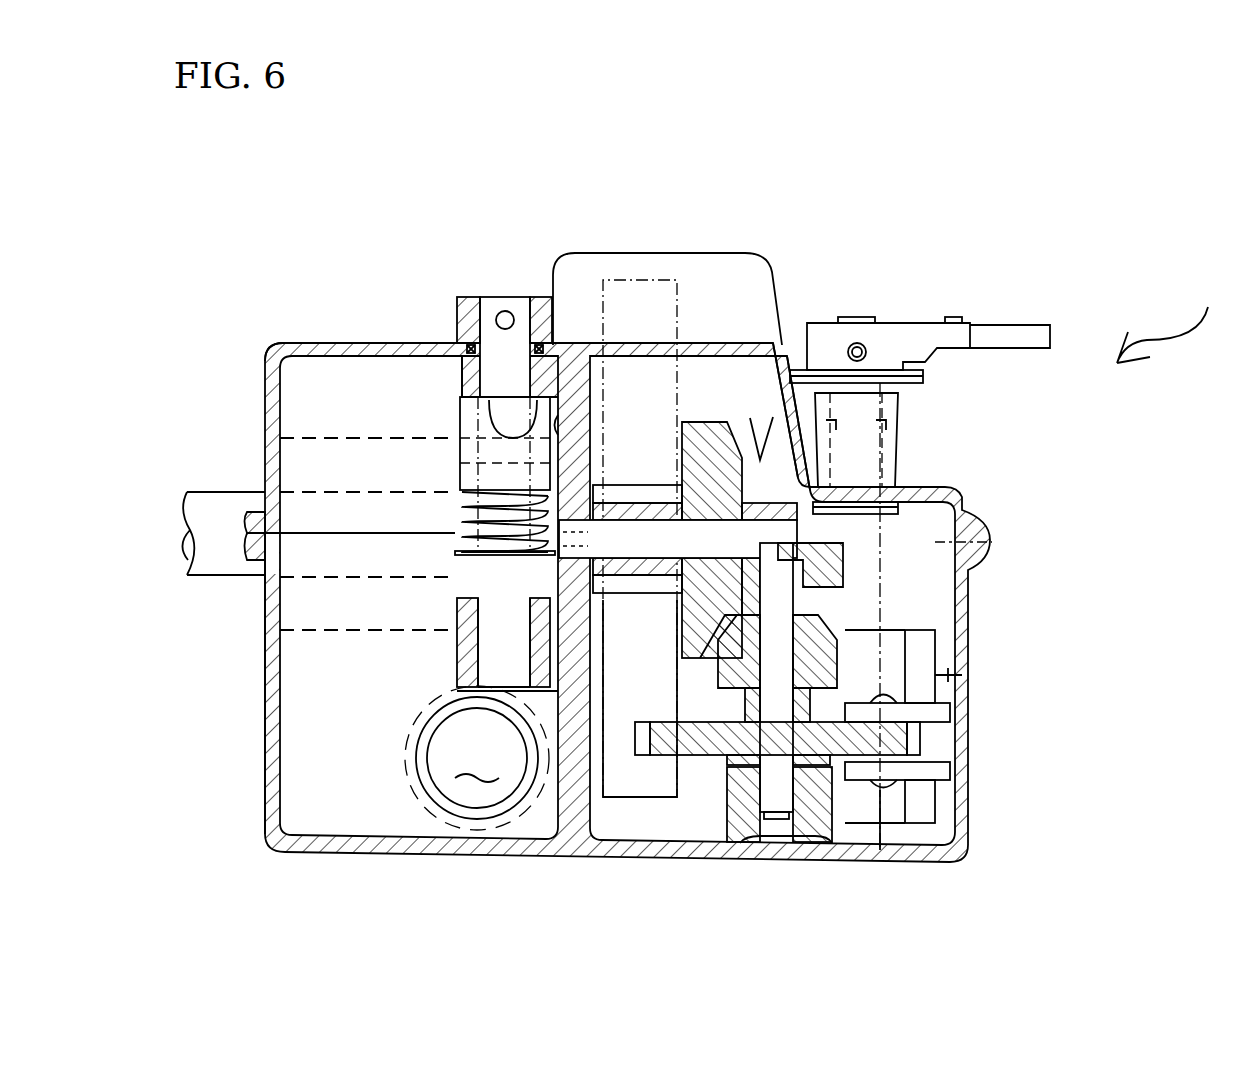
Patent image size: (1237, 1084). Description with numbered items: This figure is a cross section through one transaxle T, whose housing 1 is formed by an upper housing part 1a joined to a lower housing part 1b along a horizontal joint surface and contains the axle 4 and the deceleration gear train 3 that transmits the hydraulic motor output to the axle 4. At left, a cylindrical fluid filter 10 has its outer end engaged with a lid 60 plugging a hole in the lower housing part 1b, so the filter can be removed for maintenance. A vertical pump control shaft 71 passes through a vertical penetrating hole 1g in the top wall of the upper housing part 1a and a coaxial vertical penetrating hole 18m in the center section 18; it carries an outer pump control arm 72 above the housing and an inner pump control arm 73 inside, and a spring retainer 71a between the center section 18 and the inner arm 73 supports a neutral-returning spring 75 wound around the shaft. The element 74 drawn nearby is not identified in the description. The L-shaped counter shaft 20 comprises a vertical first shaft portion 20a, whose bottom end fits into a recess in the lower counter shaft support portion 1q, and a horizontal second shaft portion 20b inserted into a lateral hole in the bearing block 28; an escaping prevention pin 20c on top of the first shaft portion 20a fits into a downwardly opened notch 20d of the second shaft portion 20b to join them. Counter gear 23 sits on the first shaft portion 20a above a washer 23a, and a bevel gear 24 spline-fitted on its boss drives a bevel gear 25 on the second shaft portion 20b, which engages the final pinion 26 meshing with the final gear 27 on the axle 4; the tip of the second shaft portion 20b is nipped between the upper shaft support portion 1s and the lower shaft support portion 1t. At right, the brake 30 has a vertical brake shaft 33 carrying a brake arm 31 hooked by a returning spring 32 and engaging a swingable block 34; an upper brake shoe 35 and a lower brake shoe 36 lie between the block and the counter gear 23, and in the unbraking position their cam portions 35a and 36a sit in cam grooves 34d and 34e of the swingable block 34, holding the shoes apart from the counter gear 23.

The housing 1 is at (242, 330).
The upper housing part 1a is at (266, 380).
The lower housing part 1b is at (266, 705).
The vertical penetrating hole 1g is at (457, 373).
The upper shaft support portion 1s is at (558, 430).
The lower shaft support portion 1t is at (457, 692).
The lower counter shaft support portion 1q is at (740, 860).
The deceleration gear train 3 is at (780, 400).
The axle 4 is at (213, 510).
The fluid filter 10 is at (477, 758).
The center section 18 is at (457, 650).
The vertical penetrating hole 18m is at (478, 625).
The L-shaped counter shaft 20 is at (968, 581).
The first shaft portion 20a is at (785, 822).
The second shaft portion 20b is at (648, 527).
The escaping prevention pin 20c is at (937, 543).
The notch 20d is at (787, 547).
The counter gear 23 is at (920, 740).
The washer 23a is at (727, 762).
The bevel gear 24 is at (837, 648).
The bevel gear 25 is at (700, 422).
The final pinion 26 is at (640, 580).
The final gear 27 is at (680, 300).
The bearing block 28 is at (843, 562).
The brake 30 is at (948, 675).
The brake arm 31 is at (1003, 348).
The returning spring 32 is at (955, 323).
The brake shaft 33 is at (880, 598).
The swingable block 34 is at (935, 807).
The cam groove 34d is at (935, 688).
The cam groove 34e is at (897, 787).
The upper brake shoe 35 is at (950, 712).
The cam portions 35a is at (893, 692).
The lower brake shoe 36 is at (950, 770).
The cam portions 36a is at (880, 852).
The lid 60 is at (405, 754).
The pump control shaft 71 is at (488, 308).
The spring retainer 71a is at (455, 553).
The outer pump control arm 72 is at (457, 312).
The inner pump control arm 73 is at (460, 447).
The seal ring 74 is at (517, 432).
The neutral-returning spring 75 is at (462, 510).
The transaxle T is at (1169, 313).